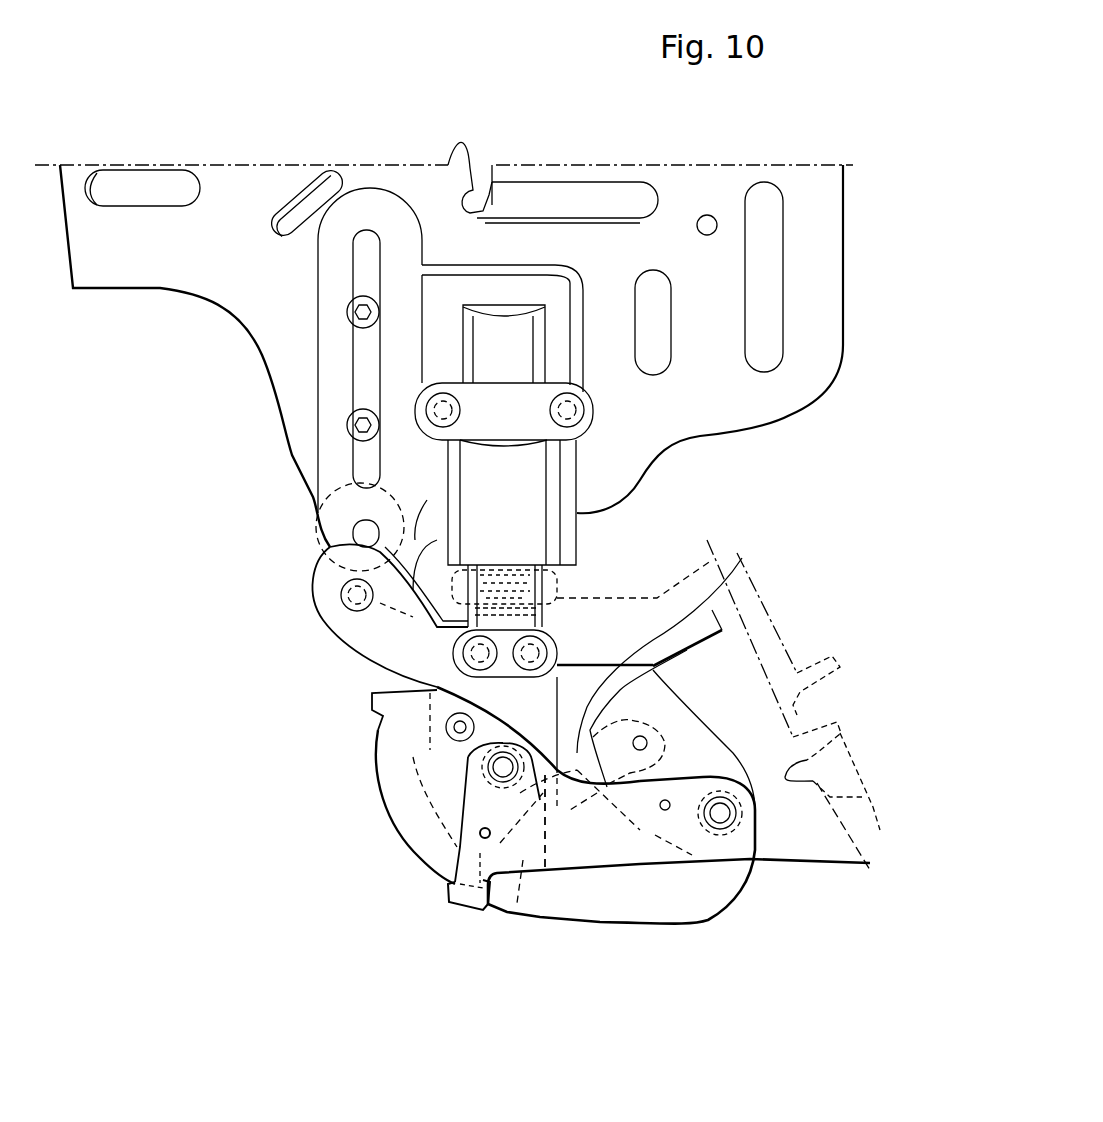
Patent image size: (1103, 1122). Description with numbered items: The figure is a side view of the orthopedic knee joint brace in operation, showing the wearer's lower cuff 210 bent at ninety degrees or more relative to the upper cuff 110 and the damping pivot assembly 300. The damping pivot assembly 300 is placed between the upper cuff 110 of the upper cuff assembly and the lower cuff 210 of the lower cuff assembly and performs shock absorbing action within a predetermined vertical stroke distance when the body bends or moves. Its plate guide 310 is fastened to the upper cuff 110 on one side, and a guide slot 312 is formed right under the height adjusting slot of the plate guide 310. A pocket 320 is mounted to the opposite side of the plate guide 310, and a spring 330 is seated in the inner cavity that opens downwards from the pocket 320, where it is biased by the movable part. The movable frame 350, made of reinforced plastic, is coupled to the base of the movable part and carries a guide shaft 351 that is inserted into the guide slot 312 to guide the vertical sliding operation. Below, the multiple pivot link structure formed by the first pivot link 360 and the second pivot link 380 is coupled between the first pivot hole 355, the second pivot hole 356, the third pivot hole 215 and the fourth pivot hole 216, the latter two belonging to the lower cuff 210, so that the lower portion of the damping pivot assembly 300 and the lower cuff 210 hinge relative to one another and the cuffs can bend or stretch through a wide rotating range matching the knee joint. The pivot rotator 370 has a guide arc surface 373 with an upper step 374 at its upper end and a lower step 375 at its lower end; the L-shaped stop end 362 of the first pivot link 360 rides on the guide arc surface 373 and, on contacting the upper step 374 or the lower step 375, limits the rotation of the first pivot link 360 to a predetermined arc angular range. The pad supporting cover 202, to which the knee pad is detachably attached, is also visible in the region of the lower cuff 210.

The upper cuff 110 is at (787, 390).
The pad supporting cover 202 is at (657, 895).
The lower cuff 210 is at (825, 847).
The third pivot hole 215 is at (710, 830).
The fourth pivot hole 216 is at (647, 733).
The damping pivot assembly 300 is at (540, 932).
The plate guide 310 is at (437, 293).
The guide slot 312 is at (332, 572).
The pocket 320 is at (597, 466).
The spring 330 is at (500, 560).
The movable frame 350 is at (540, 710).
The guide shaft 351 is at (338, 612).
The first pivot hole 355 is at (488, 758).
The second pivot hole 356 is at (492, 907).
The first pivot link 360 is at (613, 853).
The L-shaped stop end 362 is at (448, 890).
The pivot rotator 370 is at (403, 710).
The guide arc surface 373 is at (395, 823).
The upper step 374 is at (372, 716).
The lower step 375 is at (484, 912).
The second pivot link 380 is at (677, 638).